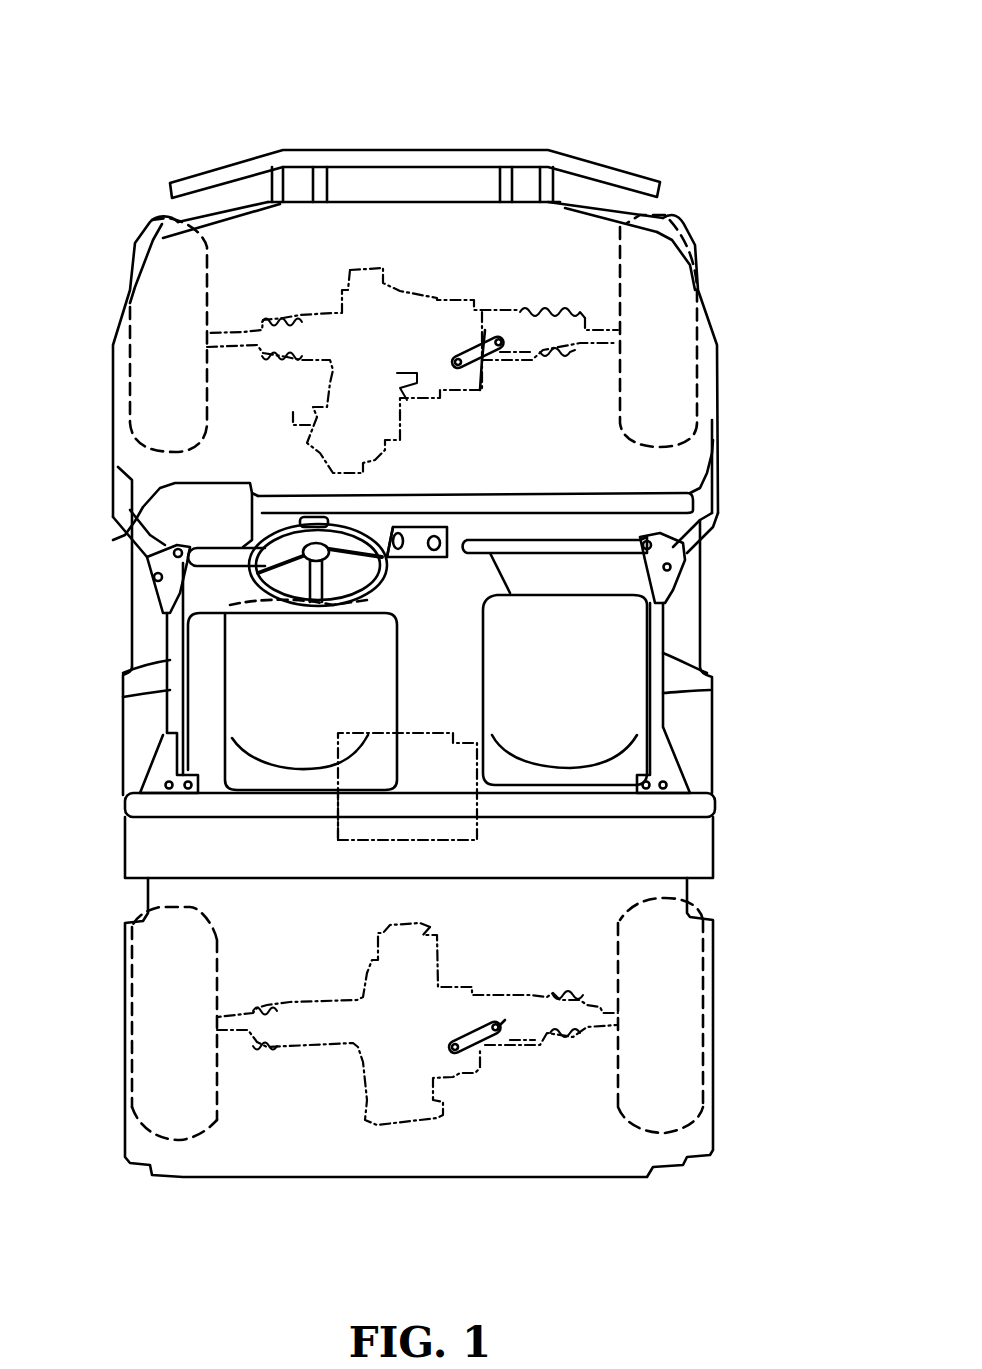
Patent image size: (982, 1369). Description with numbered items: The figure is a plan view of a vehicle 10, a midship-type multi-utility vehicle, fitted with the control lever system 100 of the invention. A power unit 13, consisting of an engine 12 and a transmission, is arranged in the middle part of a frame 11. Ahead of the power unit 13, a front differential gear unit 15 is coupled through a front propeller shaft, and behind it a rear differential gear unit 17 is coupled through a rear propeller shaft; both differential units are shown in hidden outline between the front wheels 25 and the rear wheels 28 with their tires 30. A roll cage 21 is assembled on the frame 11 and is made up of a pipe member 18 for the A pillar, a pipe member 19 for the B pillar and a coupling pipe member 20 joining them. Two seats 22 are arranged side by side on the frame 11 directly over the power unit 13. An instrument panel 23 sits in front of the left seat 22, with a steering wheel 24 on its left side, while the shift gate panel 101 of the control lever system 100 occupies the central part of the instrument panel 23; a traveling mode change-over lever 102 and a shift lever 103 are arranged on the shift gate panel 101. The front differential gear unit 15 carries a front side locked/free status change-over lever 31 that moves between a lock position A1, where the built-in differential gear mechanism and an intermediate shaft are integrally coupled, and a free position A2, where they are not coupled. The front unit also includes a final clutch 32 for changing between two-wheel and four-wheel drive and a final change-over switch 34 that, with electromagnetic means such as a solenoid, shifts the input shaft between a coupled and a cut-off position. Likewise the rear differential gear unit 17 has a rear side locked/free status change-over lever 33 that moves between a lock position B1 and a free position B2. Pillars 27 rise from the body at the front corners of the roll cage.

The vehicle 10 is at (650, 80).
The frame 11 is at (703, 626).
The engine 12 is at (480, 835).
The power unit 13 is at (332, 828).
The front differential gear unit 15 is at (438, 297).
The rear differential gear unit 17 is at (458, 1078).
The pipe member for an A pillar 18 is at (118, 537).
The pipe member for a B pillar 19 is at (127, 795).
The coupling pipe member 20 is at (170, 690).
The roll cage 21 is at (735, 487).
The seats 22 is at (225, 690).
The instrument panel 23 is at (427, 493).
The steering wheel 24 is at (283, 550).
The front wheel 25 is at (210, 333).
The roof pillar 27 is at (137, 230).
The rear wheel 28 is at (217, 1017).
The rear tire 30 is at (217, 1125).
The front side locked/free status change-over lever 31 is at (485, 330).
The final clutch 32 is at (330, 430).
The rear side locked/free status change-over lever 33 is at (480, 1027).
The final change-over switch 34 is at (407, 400).
The control lever system 100 is at (445, 522).
The shift gate panel 101 is at (415, 560).
The traveling mode change-over lever 102 is at (443, 553).
The shift lever 103 is at (397, 527).
The lock position A1 is at (533, 352).
The free position A2 is at (515, 337).
The lock position B1 is at (533, 1040).
The free position B2 is at (510, 1017).